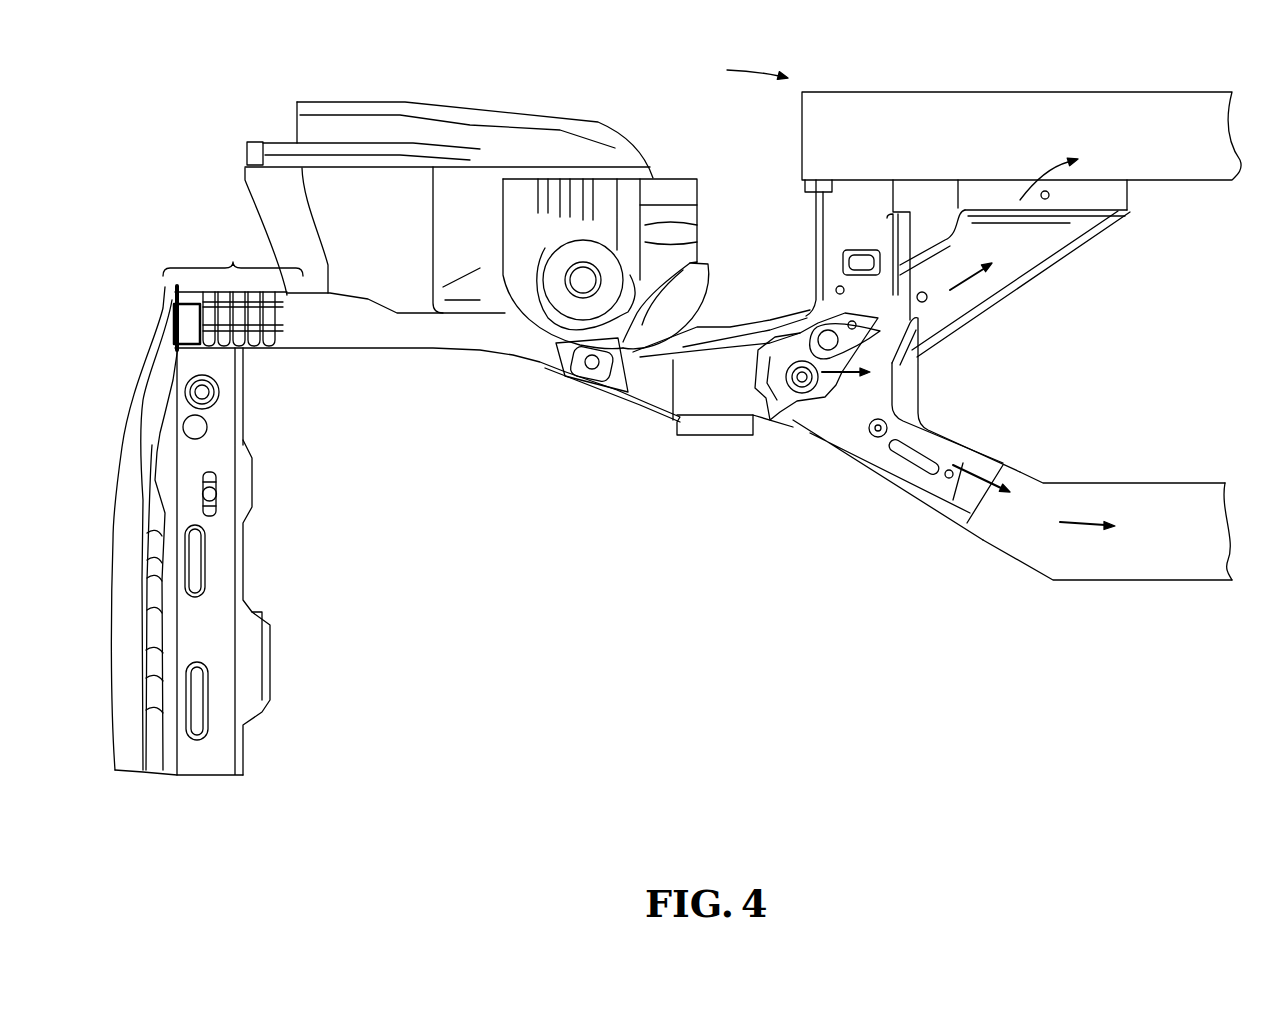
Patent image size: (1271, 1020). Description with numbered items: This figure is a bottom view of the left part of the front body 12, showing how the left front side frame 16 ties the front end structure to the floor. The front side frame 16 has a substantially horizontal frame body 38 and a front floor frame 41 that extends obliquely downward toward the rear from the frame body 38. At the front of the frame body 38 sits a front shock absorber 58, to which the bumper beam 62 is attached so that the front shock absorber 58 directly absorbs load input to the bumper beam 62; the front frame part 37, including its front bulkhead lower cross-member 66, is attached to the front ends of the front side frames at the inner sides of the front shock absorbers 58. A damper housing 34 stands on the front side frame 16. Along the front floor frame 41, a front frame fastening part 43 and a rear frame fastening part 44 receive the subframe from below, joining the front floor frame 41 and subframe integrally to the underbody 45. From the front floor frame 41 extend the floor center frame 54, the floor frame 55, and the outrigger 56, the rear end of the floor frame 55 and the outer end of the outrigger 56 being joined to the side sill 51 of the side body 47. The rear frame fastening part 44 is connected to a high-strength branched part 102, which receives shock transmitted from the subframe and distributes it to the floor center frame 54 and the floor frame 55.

The front body 12 is at (205, 205).
The front side frame 16 is at (433, 353).
The damper housing 34 is at (598, 252).
The front frame part 37 is at (298, 626).
The frame body 38 is at (498, 352).
The front floor frame 41 is at (722, 408).
The front frame fastening part 43 is at (594, 375).
The rear frame fastening part 44 is at (785, 395).
The underbody 45 is at (1045, 688).
The side body 47 is at (743, 69).
The side sill 51 is at (1047, 103).
The floor center frame 54 is at (947, 520).
The floor frame 55 is at (1043, 273).
The outrigger 56 is at (815, 230).
The front shock absorber 58 is at (233, 295).
The bumper beam 62 is at (117, 509).
The front bulkhead lower cross-member 66 is at (218, 762).
The branched part 102 is at (833, 410).